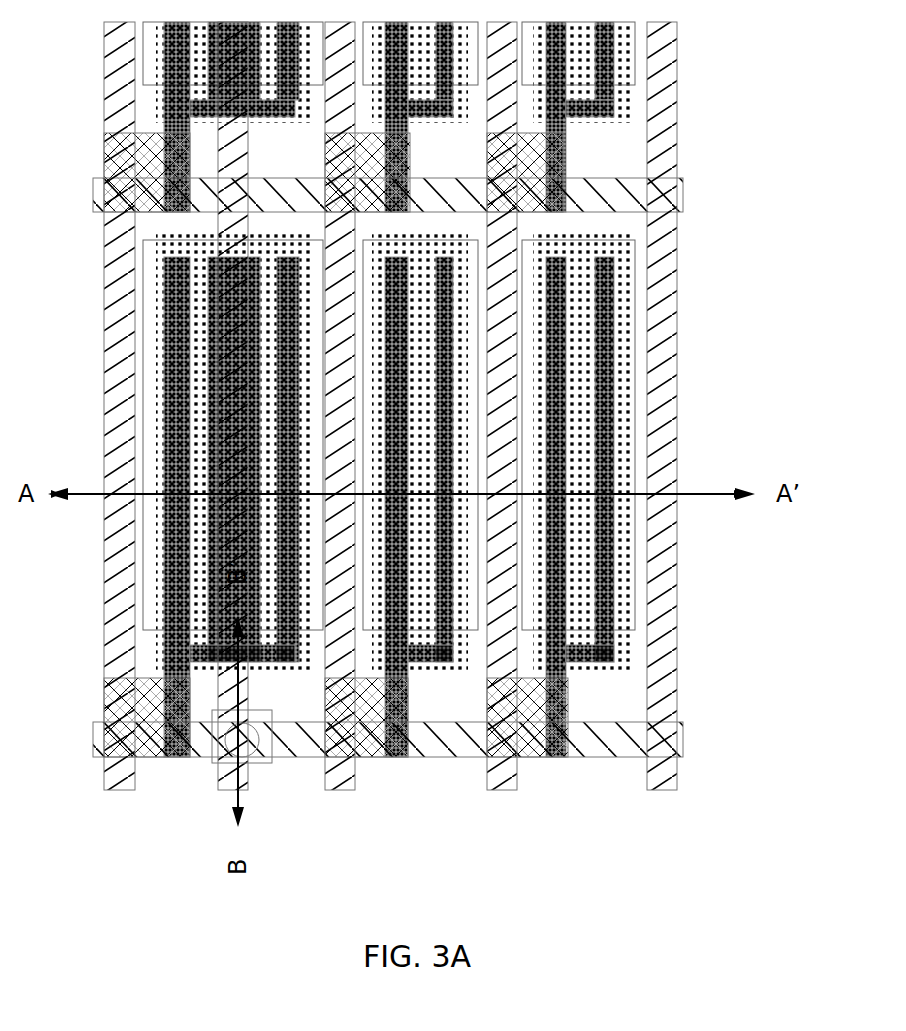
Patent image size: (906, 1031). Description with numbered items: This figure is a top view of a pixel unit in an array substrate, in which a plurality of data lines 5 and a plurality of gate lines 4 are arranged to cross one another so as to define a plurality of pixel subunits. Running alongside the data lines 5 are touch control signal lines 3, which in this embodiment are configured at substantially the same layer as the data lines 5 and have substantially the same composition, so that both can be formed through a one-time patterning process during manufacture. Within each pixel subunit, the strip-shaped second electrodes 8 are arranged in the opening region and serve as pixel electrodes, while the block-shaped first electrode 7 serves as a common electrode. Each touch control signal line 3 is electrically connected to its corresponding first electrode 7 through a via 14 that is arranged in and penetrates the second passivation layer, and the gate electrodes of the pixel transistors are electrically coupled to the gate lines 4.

The touch control signal line 3 is at (235, 466).
The gate line 4 is at (607, 737).
The data line 5 is at (343, 597).
The first electrode 7 is at (555, 437).
The second electrode 8 is at (578, 387).
The via 14 is at (233, 740).